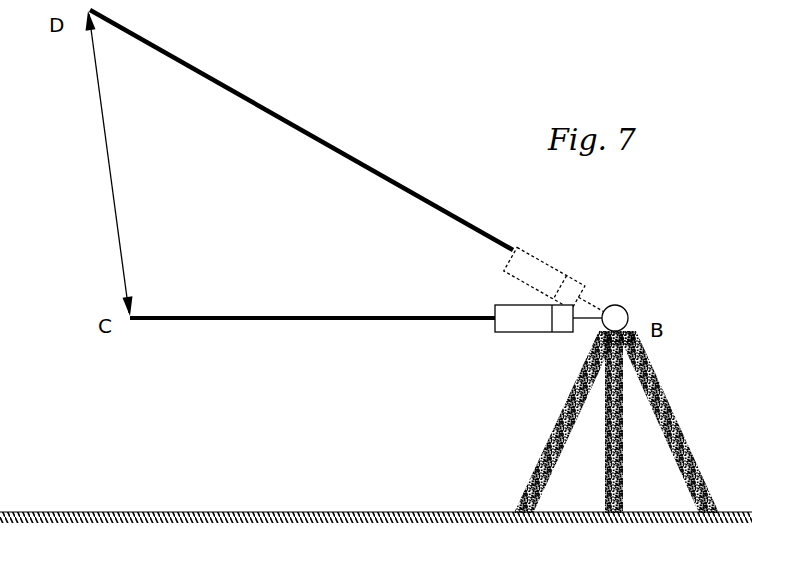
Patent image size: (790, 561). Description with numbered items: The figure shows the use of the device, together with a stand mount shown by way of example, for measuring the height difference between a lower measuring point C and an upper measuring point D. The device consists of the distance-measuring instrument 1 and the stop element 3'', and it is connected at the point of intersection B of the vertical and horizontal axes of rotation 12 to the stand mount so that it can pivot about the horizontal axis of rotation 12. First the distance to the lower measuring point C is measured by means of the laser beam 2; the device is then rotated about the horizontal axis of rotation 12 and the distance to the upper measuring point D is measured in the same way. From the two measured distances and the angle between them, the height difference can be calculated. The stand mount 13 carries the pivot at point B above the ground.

The distance-measuring instrument 1 is at (480, 361).
The laser beam 2 is at (301, 249).
The stop element 3'' is at (599, 274).
The horizontal axis of rotation 12 is at (658, 313).
The tripod 13 is at (564, 422).